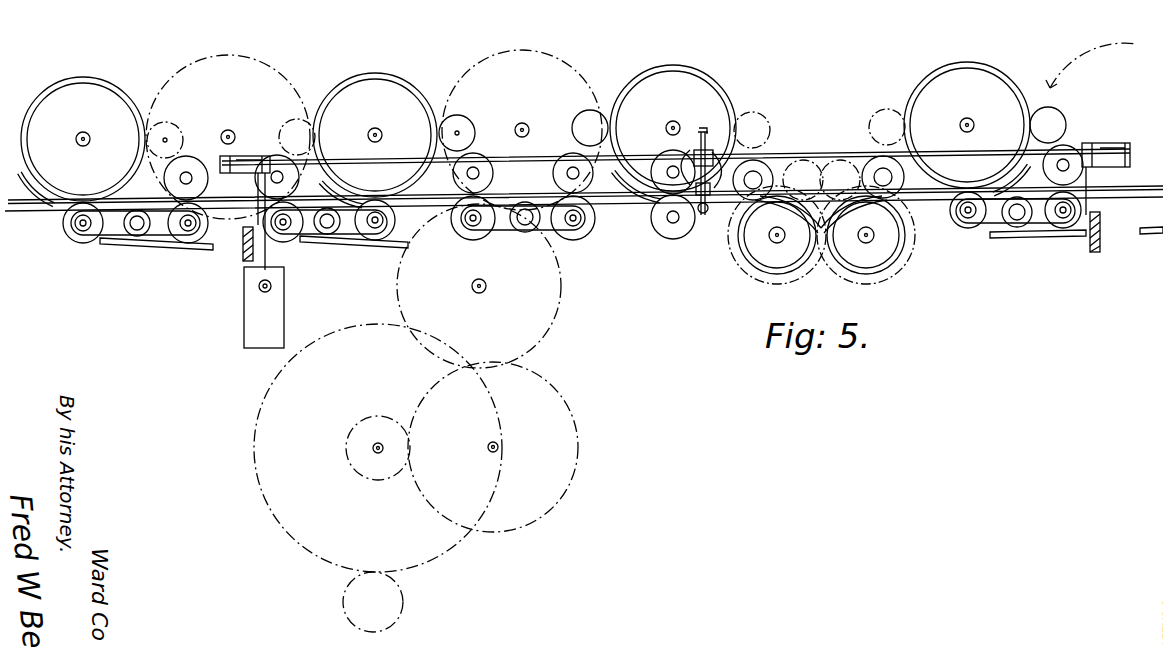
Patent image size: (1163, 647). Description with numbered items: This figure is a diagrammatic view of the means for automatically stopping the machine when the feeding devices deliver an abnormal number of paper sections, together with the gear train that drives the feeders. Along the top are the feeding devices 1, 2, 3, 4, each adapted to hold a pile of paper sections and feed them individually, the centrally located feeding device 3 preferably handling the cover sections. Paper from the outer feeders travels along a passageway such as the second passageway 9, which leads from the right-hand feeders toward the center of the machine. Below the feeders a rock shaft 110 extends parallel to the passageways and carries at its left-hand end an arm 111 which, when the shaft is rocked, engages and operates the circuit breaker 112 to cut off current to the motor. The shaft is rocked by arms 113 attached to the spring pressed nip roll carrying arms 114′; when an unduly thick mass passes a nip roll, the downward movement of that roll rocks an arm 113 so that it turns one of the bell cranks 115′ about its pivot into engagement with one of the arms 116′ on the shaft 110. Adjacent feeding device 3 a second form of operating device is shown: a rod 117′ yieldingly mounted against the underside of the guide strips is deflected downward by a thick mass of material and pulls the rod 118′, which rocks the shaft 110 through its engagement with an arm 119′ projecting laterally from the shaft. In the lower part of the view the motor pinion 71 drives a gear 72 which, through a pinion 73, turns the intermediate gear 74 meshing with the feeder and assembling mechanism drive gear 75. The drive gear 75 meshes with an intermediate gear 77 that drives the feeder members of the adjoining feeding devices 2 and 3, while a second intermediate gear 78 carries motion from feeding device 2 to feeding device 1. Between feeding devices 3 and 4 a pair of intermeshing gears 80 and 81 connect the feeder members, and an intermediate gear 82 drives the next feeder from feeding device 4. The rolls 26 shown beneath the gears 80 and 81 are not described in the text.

The feeding device 1 is at (100, 79).
The feeding device 2 is at (353, 76).
The feeding device 3 is at (645, 68).
The feeding device 4 is at (926, 72).
The second passageway 9 is at (1147, 193).
The feed rollers 26 is at (850, 270).
The pinion 71 is at (404, 604).
The gear 72 is at (455, 548).
The pinion 73 is at (355, 470).
The intermediate gear 74 is at (545, 513).
The feeder and assembling mechanism drive gear 75 is at (561, 313).
The intermediate gear 77 is at (535, 44).
The second intermediate gear 78 is at (267, 60).
The gear 80 is at (718, 220).
The gear 81 is at (905, 246).
The intermediate gear 82 is at (1093, 44).
The rock shaft 110 is at (345, 155).
The arm 111 is at (258, 280).
The circuit breaker 112 is at (246, 327).
The arm 113 is at (160, 246).
The spring pressed nip roll carrying arm 114' is at (573, 237).
The bell crank 115' is at (684, 211).
The arm 116' is at (675, 188).
The rod 117' is at (679, 227).
The rod 118' is at (675, 156).
The arm 119' is at (700, 156).